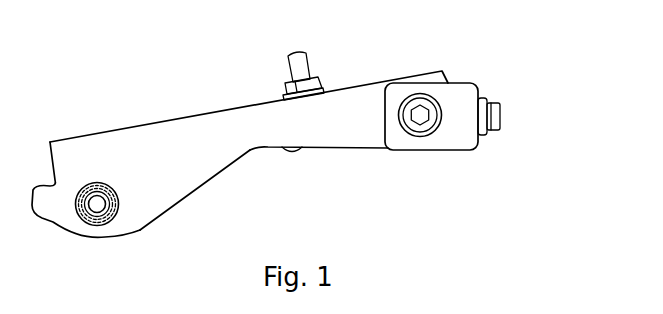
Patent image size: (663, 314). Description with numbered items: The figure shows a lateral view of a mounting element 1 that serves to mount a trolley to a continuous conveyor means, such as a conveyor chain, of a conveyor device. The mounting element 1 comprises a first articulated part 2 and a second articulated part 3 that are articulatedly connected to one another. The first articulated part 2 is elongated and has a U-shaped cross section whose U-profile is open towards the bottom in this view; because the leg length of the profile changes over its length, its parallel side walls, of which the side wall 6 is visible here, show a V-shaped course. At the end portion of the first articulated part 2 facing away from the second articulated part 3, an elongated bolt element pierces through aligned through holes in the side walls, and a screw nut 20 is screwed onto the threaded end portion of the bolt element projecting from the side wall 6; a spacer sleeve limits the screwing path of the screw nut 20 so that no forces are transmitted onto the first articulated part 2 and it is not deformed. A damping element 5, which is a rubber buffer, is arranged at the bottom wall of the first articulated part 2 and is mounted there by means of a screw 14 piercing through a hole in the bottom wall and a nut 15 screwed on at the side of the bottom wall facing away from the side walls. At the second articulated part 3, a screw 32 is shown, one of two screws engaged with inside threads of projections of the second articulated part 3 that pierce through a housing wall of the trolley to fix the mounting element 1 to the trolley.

The mounting element 1 is at (101, 70).
The first articulated part 2 is at (222, 110).
The second articulated part 3 is at (463, 83).
The damping element 5 is at (290, 153).
The side wall 6 is at (181, 200).
The screw 14 is at (304, 56).
The nut 15 is at (286, 84).
The screw nut 20 is at (98, 188).
The screw 32 is at (503, 115).